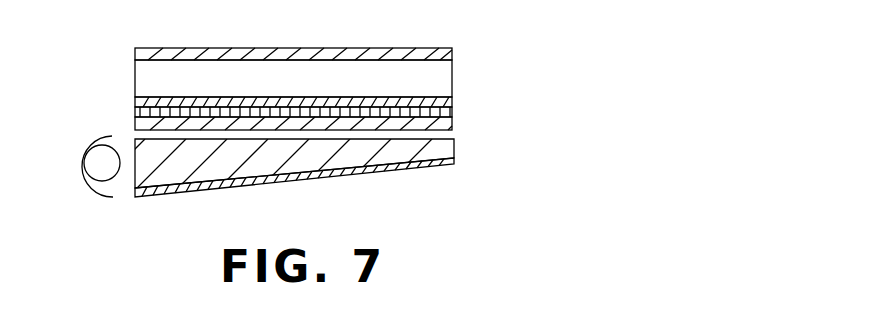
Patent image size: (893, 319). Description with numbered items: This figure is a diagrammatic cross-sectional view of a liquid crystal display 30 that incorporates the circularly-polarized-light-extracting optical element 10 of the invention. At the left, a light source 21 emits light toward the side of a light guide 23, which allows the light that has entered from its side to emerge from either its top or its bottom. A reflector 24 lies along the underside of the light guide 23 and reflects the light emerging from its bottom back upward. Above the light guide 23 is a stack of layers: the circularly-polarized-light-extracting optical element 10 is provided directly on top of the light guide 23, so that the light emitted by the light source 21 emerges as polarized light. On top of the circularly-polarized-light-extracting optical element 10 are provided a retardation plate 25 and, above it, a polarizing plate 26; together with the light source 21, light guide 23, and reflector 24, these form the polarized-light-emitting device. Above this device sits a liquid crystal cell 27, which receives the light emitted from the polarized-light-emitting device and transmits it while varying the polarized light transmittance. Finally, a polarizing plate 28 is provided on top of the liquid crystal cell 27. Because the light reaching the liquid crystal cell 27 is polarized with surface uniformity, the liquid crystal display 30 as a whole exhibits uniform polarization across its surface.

The liquid crystal display 30 is at (542, 61).
The polarizing plate 28 is at (453, 50).
The liquid crystal cell 27 is at (447, 66).
The polarizing plate 26 is at (448, 102).
The retardation plate 25 is at (453, 112).
The circularly-polarized-light-extracting optical element 10 is at (453, 125).
The light guide 23 is at (453, 147).
The reflector 24 is at (453, 163).
The light source 21 is at (100, 152).